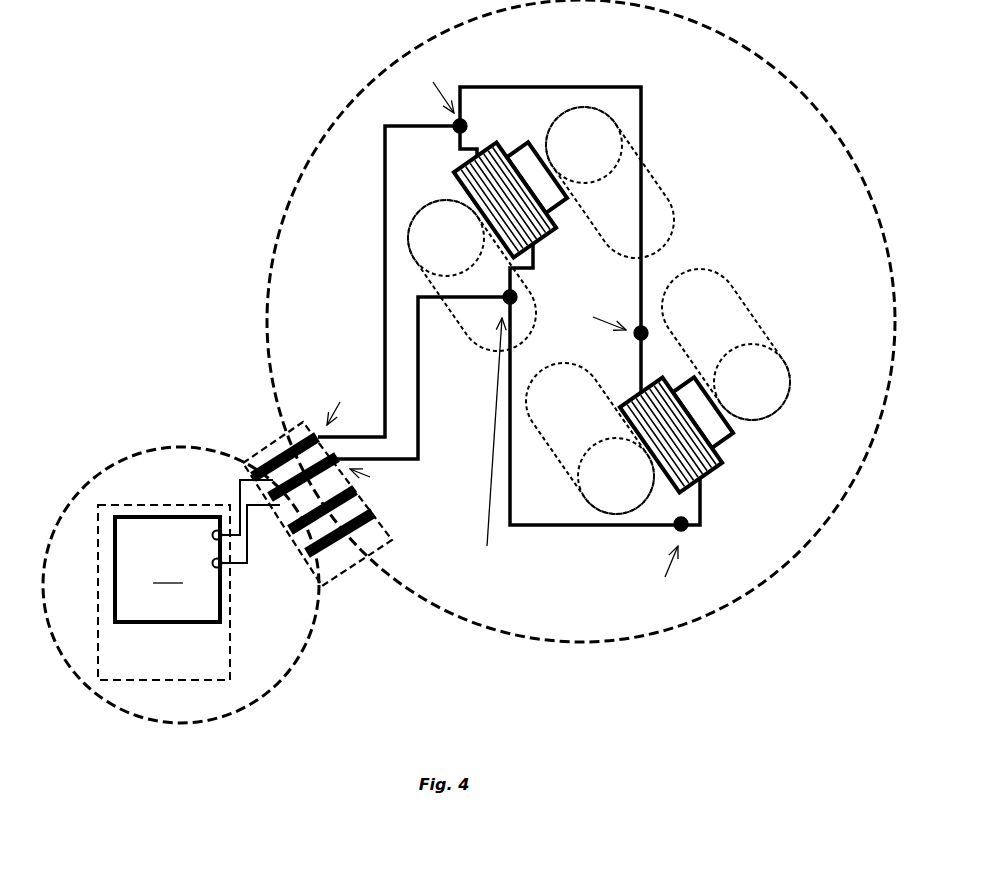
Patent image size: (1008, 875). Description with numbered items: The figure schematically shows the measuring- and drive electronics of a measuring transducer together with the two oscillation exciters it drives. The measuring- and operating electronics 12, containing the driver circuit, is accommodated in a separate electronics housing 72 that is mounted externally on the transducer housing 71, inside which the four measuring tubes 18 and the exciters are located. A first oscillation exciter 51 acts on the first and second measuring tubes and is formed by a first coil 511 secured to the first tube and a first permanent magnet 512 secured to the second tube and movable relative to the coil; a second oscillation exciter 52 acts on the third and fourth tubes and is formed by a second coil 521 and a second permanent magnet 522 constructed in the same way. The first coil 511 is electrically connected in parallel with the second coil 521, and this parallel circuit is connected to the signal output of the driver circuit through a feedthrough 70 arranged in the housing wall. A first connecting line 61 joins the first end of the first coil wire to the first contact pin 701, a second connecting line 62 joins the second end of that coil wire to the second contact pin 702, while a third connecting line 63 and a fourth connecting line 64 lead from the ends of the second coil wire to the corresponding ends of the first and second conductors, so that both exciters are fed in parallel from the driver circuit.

The transducer housing 71 is at (314, 121).
The electronics housing 72 is at (120, 470).
The measuring- and operating electronics 12 is at (190, 668).
The feedthrough 70 is at (296, 543).
The first contact pin 701 is at (290, 432).
The second contact pin 702 is at (285, 508).
The first connecting line 61 is at (405, 273).
The second connecting line 62 is at (423, 366).
The third connecting line 63 is at (637, 125).
The fourth connecting line 64 is at (562, 528).
The measuring tubes 18 is at (759, 393).
The first oscillation exciter 51 is at (496, 187).
The first coil 511 is at (492, 175).
The first permanent magnet 512 is at (528, 165).
The second oscillation exciter 52 is at (734, 473).
The second coil 521 is at (740, 470).
The second permanent magnet 522 is at (727, 428).